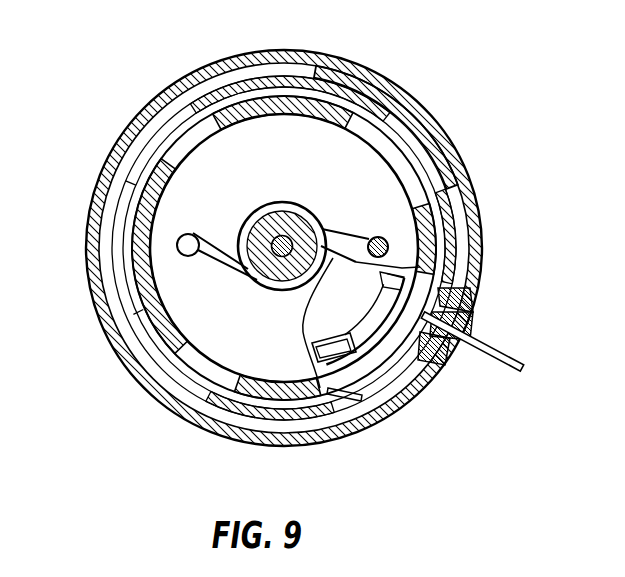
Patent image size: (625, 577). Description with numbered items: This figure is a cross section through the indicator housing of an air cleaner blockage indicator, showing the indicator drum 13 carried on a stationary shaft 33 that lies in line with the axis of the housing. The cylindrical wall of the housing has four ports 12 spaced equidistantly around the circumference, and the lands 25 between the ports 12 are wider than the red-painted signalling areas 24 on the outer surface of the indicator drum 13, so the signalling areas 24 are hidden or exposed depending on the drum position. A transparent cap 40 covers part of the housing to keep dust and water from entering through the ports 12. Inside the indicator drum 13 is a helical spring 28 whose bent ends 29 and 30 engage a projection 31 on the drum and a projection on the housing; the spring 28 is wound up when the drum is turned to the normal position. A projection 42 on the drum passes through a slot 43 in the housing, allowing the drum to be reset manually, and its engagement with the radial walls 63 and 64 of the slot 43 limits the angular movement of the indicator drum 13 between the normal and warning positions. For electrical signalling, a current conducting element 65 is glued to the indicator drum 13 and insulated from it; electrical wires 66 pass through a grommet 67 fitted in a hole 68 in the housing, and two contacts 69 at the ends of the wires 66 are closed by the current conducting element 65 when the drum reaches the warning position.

The ports 12 is at (125, 92).
The indicator drum 13 is at (143, 400).
The signalling areas 24 is at (197, 462).
The lands 25 is at (60, 288).
The helical spring 28 is at (348, 250).
The end of the helical spring 29 is at (373, 236).
The end of the helical spring 30 is at (187, 235).
The projection on the indicator drum 31 is at (192, 257).
The stationary shaft 33 is at (282, 222).
The transparent cap 40 is at (422, 104).
The projection 42 is at (310, 325).
The slot 43 is at (360, 318).
The radial wall of the slot 63 is at (403, 265).
The radial wall of the slot 64 is at (312, 357).
The current conducting element 65 is at (360, 435).
The electrical wires 66 is at (520, 375).
The grommet 67 is at (470, 325).
The hole 68 is at (470, 297).
The contacts 69 is at (438, 380).